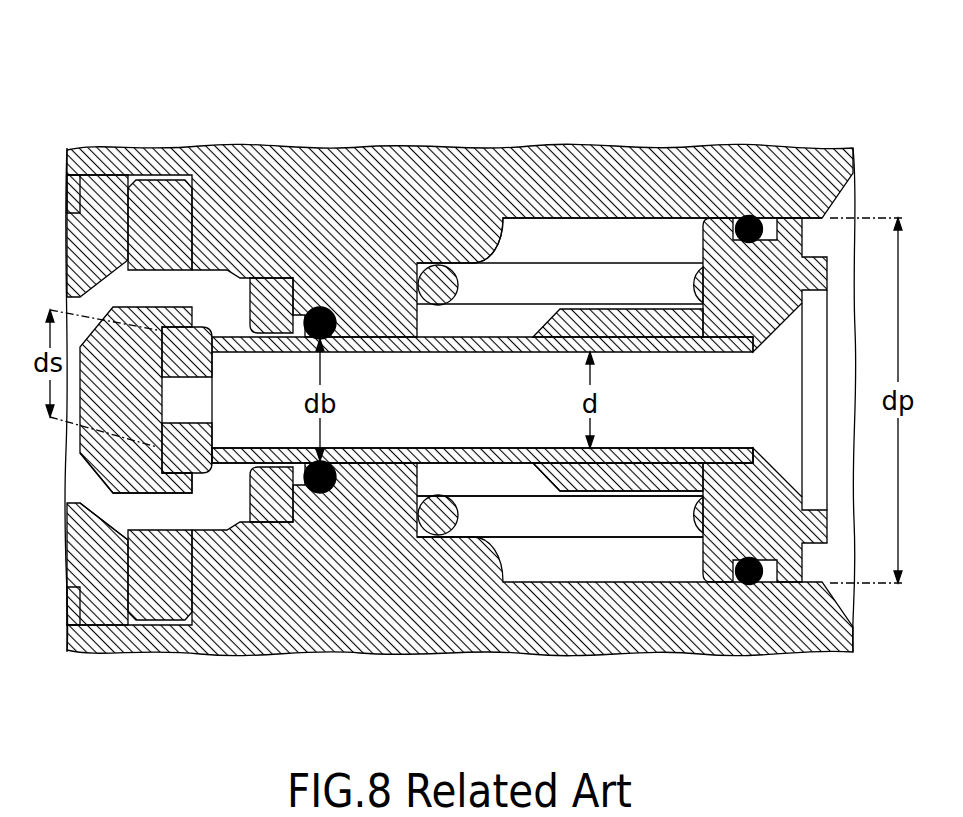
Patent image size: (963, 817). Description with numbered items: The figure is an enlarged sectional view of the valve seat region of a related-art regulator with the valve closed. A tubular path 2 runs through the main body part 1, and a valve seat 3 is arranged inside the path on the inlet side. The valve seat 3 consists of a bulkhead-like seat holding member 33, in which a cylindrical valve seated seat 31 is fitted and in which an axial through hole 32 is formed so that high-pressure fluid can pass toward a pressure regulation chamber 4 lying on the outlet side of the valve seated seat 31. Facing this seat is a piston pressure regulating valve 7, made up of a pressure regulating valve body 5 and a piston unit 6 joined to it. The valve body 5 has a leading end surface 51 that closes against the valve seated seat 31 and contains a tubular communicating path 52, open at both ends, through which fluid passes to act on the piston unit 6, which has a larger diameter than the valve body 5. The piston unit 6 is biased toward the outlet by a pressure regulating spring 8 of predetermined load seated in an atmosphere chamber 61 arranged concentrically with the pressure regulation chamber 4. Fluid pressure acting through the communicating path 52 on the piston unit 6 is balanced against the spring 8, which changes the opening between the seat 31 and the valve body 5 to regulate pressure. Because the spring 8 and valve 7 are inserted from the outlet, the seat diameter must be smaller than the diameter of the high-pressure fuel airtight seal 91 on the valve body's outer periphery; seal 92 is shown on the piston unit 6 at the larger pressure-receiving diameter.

The main body part 1 is at (800, 185).
The tubular path 2 is at (240, 275).
The valve seat 3 is at (83, 500).
The seat holding member 33 is at (102, 487).
The through hole 32 is at (153, 290).
The valve seated seat 31 is at (193, 477).
The leading end surface 51 is at (212, 342).
The pressure regulation chamber 4 is at (240, 515).
The pressure regulating valve body 5 is at (372, 333).
The communicating path 52 is at (400, 407).
The atmosphere chamber 61 is at (547, 248).
The piston pressure regulating valve 7 is at (598, 338).
The pressure regulating spring 8 is at (597, 517).
The piston unit 6 is at (752, 290).
The high-pressure fuel airtight seal 91 is at (323, 493).
The O-ring 92 is at (750, 585).